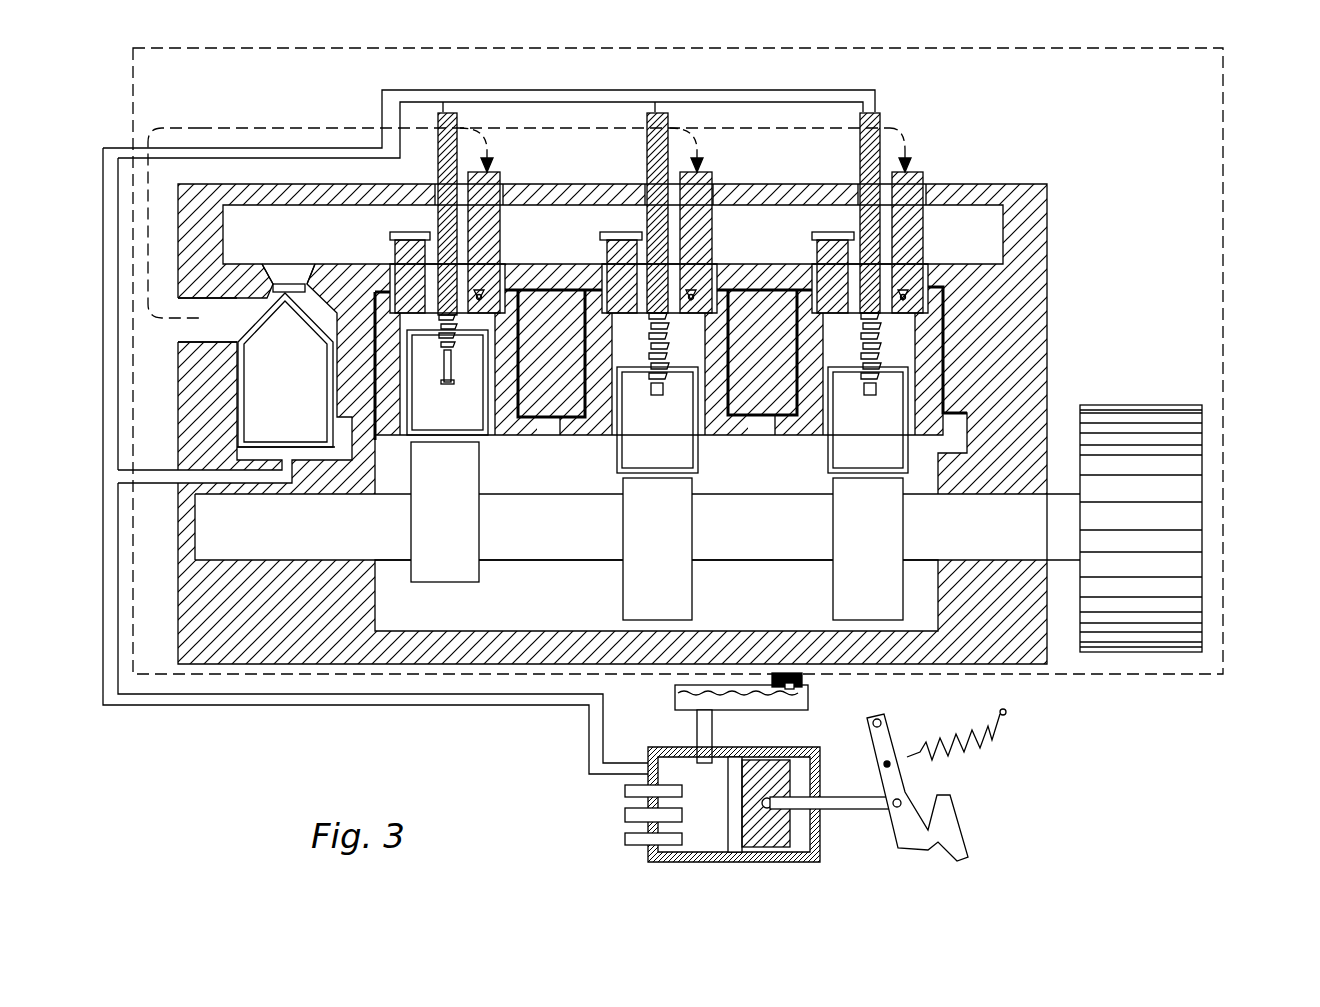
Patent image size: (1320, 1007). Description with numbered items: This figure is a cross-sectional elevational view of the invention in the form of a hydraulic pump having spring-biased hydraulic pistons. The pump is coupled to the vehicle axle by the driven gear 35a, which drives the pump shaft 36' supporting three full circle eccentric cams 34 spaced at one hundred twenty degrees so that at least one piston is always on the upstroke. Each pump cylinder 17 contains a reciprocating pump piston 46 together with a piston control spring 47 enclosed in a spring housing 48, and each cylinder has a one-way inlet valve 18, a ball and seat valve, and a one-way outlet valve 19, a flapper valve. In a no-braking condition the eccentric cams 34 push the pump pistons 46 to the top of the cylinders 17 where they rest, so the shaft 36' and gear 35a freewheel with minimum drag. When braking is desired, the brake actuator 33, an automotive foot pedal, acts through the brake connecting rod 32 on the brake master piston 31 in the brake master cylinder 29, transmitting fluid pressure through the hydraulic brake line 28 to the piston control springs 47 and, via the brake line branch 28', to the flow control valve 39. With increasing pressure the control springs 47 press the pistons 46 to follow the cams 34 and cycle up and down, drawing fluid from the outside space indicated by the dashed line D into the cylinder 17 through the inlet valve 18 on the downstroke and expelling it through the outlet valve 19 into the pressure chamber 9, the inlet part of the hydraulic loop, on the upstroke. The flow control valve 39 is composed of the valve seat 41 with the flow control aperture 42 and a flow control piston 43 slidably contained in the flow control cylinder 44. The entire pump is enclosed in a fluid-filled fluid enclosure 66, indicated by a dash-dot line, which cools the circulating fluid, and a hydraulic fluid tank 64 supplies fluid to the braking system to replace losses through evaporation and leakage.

The dashed line D is at (160, 128).
The pressure chamber 9 is at (778, 254).
The pump cylinder 17 is at (897, 333).
The inlet valve 18 is at (522, 275).
The outlet valve 19 is at (392, 257).
The hydraulic brake line 28 is at (489, 446).
The brake line branch 28' is at (148, 501).
The brake master cylinder 29 is at (640, 800).
The brake master piston 31 is at (765, 833).
The brake connecting rod 32 is at (852, 806).
The brake actuator 33 is at (953, 818).
The eccentric cam 34 is at (455, 463).
The driven gear 35a is at (1160, 458).
The pump shaft 36' is at (637, 557).
The flow control valve 39 is at (220, 332).
The valve seat 41 is at (283, 263).
The flow control aperture 42 is at (268, 282).
The flow control piston 43 is at (300, 376).
The flow control cylinder 44 is at (283, 457).
The pump piston 46 is at (460, 420).
The piston control spring 47 is at (880, 358).
The spring housing 48 is at (440, 215).
The hydraulic fluid tank 64 is at (790, 705).
The fluid enclosure 66 is at (1225, 190).